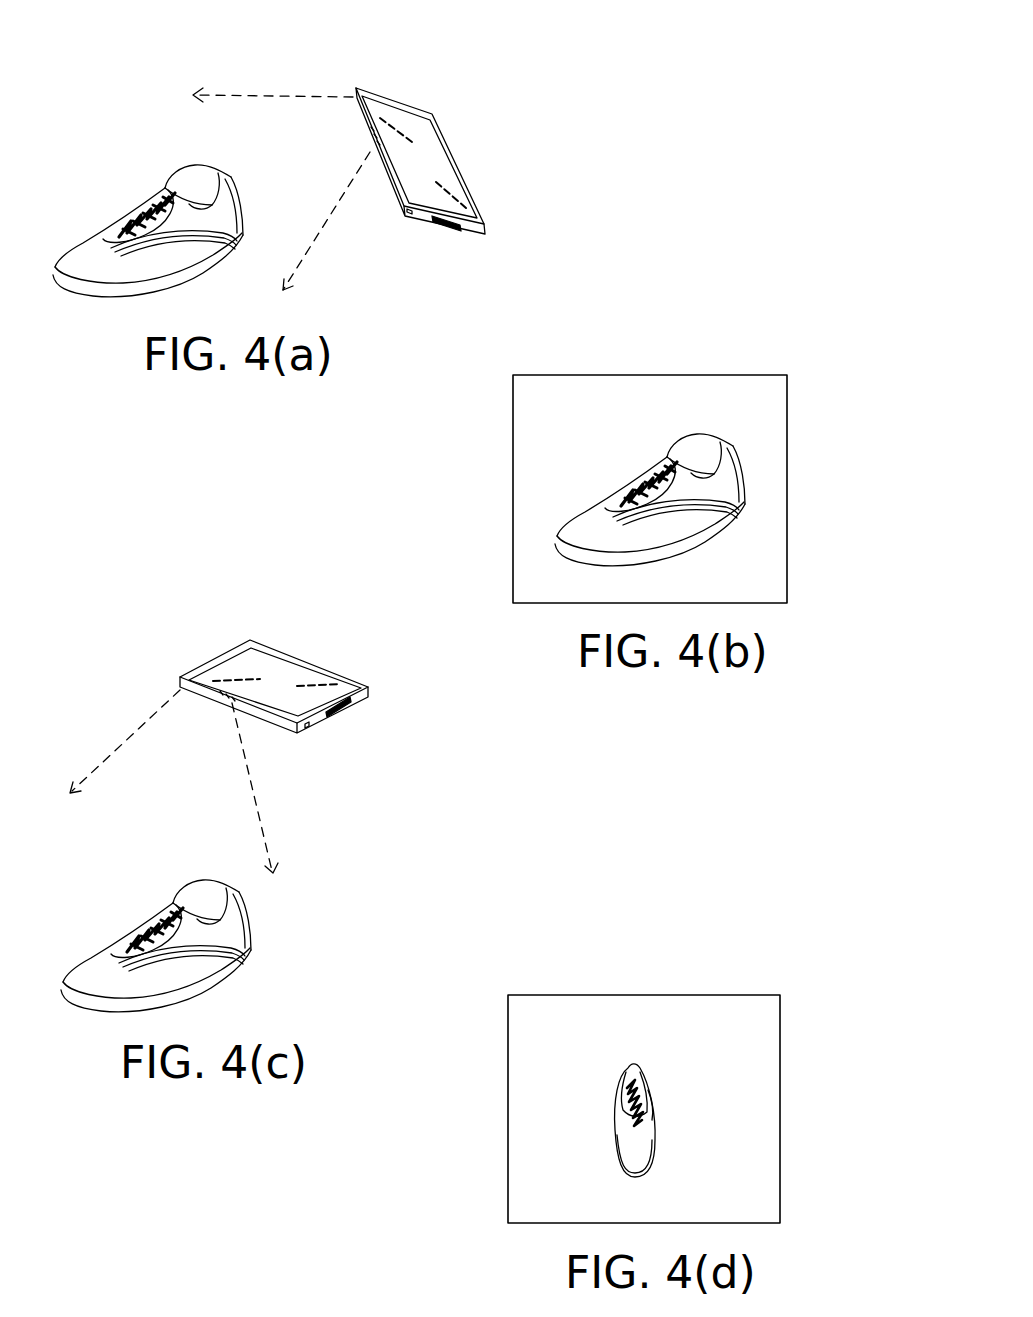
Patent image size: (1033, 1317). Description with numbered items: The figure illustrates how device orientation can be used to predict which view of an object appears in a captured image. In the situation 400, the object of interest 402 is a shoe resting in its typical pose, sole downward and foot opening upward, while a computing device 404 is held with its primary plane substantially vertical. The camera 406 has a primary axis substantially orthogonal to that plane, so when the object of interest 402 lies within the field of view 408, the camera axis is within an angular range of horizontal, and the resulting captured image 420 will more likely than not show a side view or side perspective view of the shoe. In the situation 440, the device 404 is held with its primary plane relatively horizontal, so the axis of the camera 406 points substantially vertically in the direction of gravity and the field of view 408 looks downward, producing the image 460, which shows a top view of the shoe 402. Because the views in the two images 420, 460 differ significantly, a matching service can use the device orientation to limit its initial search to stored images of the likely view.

In FIG. 4A, the situation 400 is at (546, 97).
In FIG. 4A, the object of interest 402 is at (134, 200).
In FIG. 4B, the object of interest 402 is at (742, 478).
In FIG. 4C, the object of interest 402 is at (98, 960).
In FIG. 4D, the object of interest 402 is at (653, 1090).
In FIG. 4A, the computing device 404 is at (412, 212).
In FIG. 4C, the computing device 404 is at (310, 723).
In FIG. 4A, the camera 406 is at (400, 100).
In FIG. 4C, the camera 406 is at (222, 660).
In FIG. 4A, the field of view 408 is at (355, 173).
In FIG. 4C, the field of view 408 is at (240, 740).
In FIG. 4B, the captured image 420 is at (822, 360).
In FIG. 4C, the situation 440 is at (395, 664).
In FIG. 4D, the image 460 is at (812, 1000).